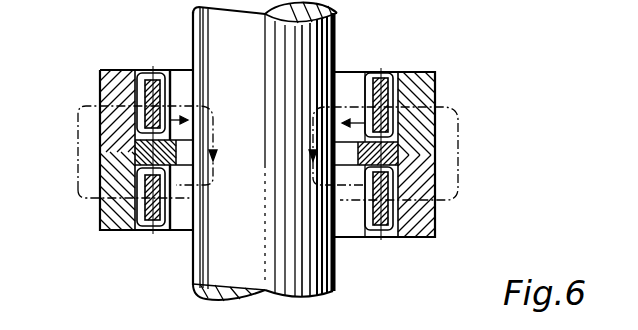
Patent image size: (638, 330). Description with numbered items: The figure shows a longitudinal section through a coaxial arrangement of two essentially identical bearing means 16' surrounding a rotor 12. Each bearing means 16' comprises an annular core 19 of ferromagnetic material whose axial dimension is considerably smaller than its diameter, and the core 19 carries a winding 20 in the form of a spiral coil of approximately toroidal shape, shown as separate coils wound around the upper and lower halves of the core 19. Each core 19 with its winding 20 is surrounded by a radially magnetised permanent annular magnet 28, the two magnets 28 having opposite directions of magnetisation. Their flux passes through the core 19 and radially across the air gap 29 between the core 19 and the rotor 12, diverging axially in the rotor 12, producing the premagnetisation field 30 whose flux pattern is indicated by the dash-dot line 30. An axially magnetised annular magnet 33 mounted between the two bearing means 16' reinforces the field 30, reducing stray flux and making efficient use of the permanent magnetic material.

The rotor 12 is at (243, 265).
The bearing means 16' is at (420, 145).
The annular core 19 is at (151, 78).
The winding 20 is at (171, 77).
The permanent magnet 28 is at (115, 92).
The air gap 29 is at (350, 83).
The magnetic field 30 is at (463, 176).
The axially magnetised annular magnet 33 is at (133, 151).